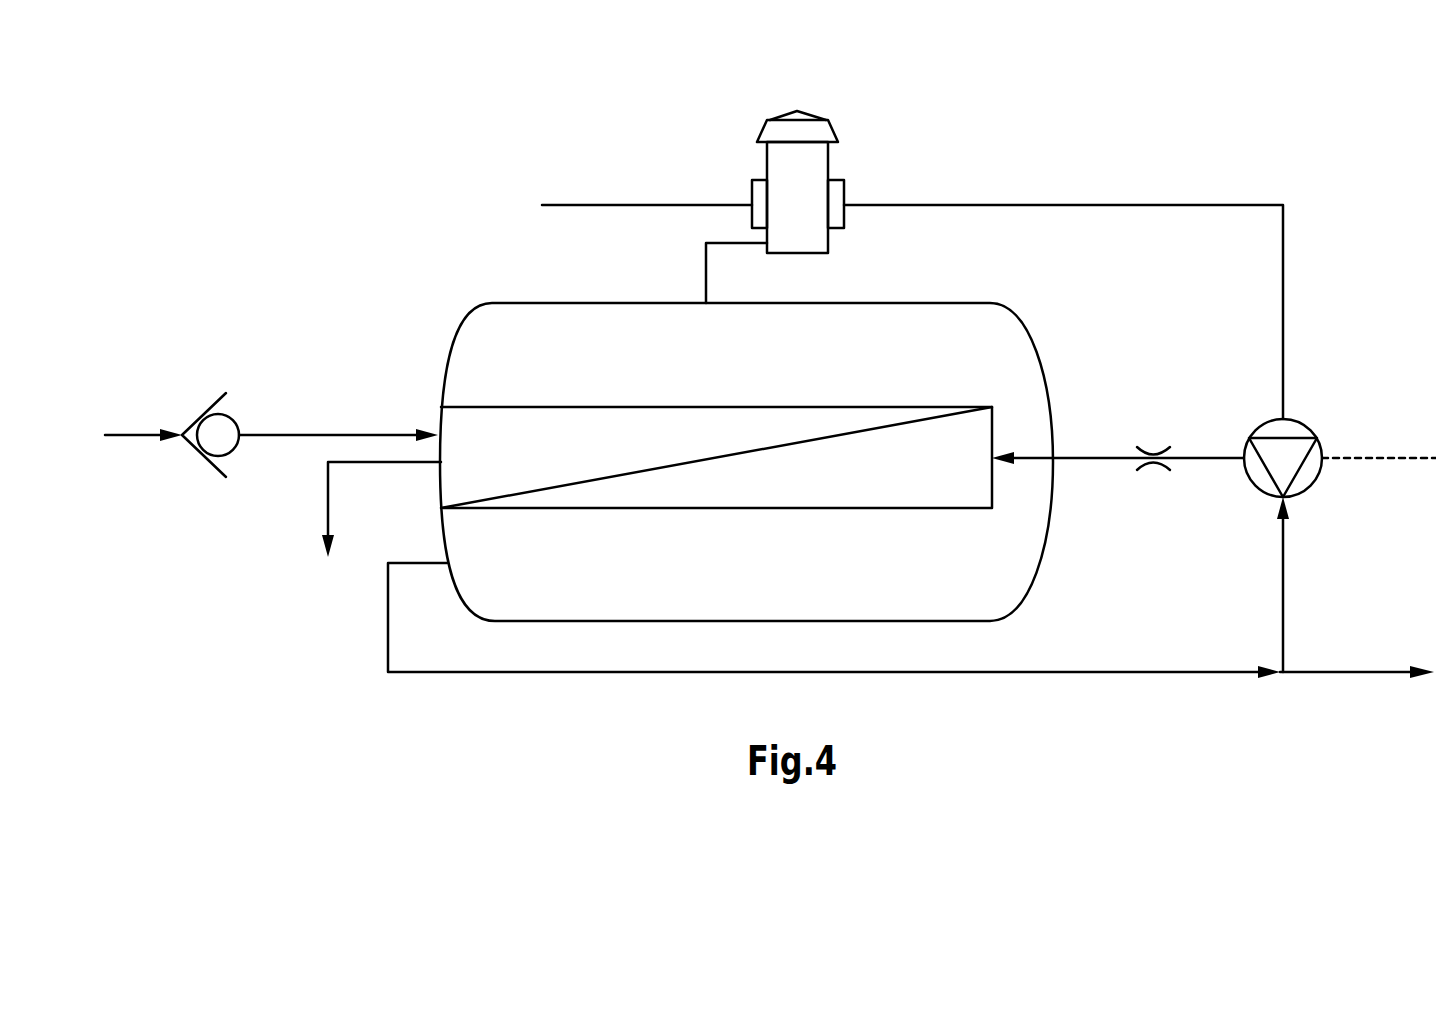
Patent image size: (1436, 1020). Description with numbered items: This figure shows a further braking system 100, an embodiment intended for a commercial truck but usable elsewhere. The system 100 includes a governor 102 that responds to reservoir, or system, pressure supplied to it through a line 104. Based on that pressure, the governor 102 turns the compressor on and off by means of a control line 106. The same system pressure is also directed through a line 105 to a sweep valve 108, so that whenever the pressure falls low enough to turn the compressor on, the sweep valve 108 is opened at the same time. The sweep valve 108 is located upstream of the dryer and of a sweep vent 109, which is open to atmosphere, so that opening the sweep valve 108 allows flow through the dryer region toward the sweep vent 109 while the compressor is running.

The system 100 is at (620, 725).
The governor 102 is at (837, 125).
The line 104 is at (705, 267).
The line 105 is at (1157, 205).
The control line 106 is at (580, 205).
The sweep valve 108 is at (1298, 422).
The sweep vent 109 is at (373, 524).